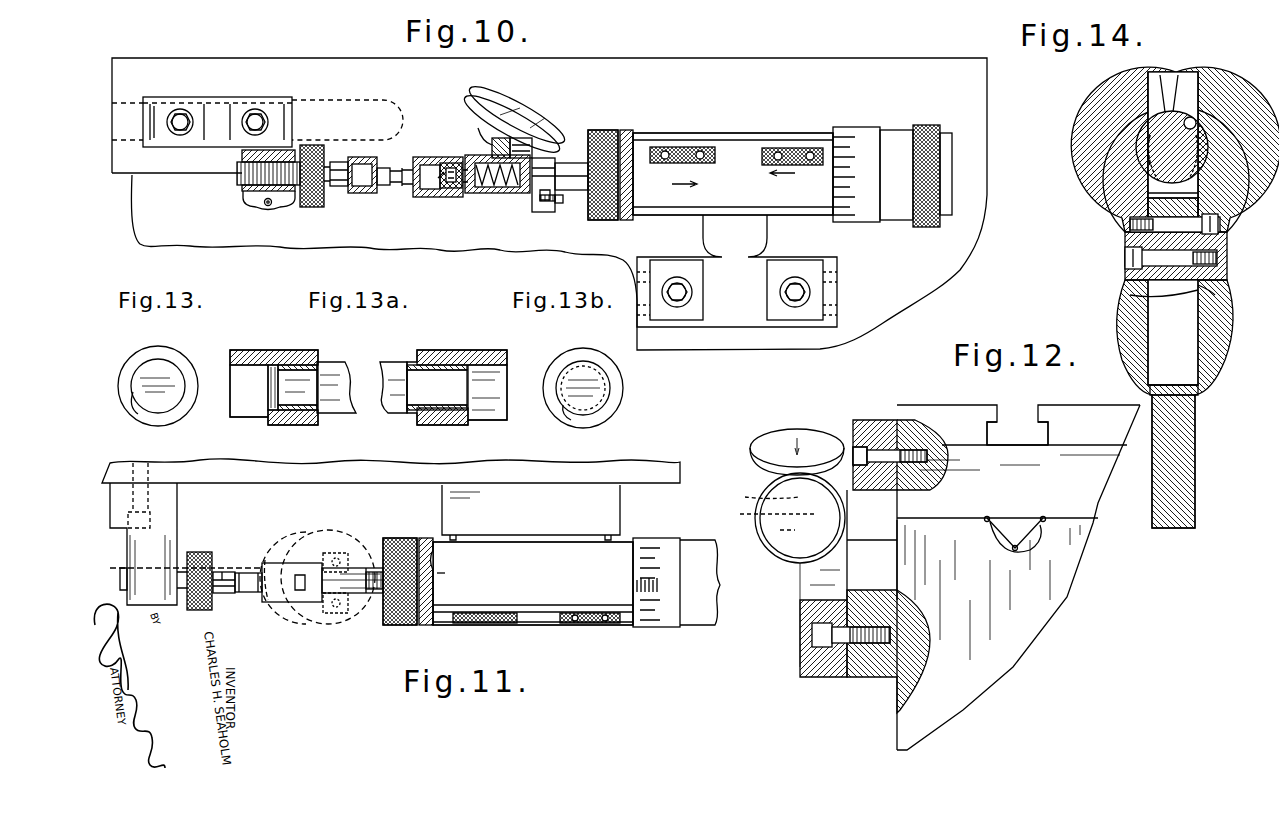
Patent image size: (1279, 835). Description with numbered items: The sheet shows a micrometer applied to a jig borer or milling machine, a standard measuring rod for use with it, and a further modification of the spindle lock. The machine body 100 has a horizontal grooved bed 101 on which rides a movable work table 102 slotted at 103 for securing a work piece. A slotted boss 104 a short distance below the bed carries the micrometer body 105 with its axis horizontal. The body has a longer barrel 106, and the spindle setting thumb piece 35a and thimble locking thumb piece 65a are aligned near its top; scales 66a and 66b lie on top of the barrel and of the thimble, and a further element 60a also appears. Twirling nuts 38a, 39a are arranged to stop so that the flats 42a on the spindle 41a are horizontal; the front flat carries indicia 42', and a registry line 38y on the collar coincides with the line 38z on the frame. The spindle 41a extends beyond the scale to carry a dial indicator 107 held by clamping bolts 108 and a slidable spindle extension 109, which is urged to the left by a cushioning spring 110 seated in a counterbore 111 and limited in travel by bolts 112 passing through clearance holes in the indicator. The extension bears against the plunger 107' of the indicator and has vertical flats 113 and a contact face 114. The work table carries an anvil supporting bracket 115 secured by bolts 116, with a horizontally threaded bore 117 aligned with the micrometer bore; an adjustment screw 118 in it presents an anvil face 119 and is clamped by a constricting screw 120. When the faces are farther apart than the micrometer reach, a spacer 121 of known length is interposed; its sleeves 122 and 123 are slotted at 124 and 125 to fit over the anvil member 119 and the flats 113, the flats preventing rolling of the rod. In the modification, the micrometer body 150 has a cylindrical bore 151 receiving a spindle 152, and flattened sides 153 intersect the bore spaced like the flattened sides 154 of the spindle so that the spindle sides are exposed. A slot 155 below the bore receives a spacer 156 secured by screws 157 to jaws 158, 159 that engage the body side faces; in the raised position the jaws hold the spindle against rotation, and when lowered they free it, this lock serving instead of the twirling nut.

In FIG. 10, the spindle setting thumb piece 35a is at (720, 165).
In FIG. 11, the spindle setting thumb piece 35a is at (480, 612).
In FIG. 10, the twirling nut 38a is at (628, 130).
In FIG. 11, the twirling nut 38a is at (428, 626).
In FIG. 11, the registry line 38y is at (440, 562).
In FIG. 11, the frame line 38z is at (440, 575).
In FIG. 10, the twirling nut 39a is at (605, 130).
In FIG. 11, the twirling nut 39a is at (398, 538).
In FIG. 10, the spindle 41a is at (572, 162).
In FIG. 11, the spindle 41a is at (365, 567).
In FIG. 12, the spindle 41a is at (745, 515).
In FIG. 11, the flats 42a is at (364, 594).
In FIG. 12, the flats 42a is at (748, 497).
In FIG. 11, the indicia 42' is at (379, 609).
In FIG. 10, the thimble 60a is at (900, 135).
In FIG. 10, the thimble locking thumb piece 65a is at (812, 167).
In FIG. 11, the thimble locking thumb piece 65a is at (585, 612).
In FIG. 11, the scale 66a is at (640, 598).
In FIG. 11, the scale 66b is at (670, 538).
In FIG. 10, the body 100 is at (178, 223).
In FIG. 12, the body 100 is at (990, 628).
In FIG. 12, the horizontal grooved bed 101 is at (1002, 550).
In FIG. 10, the movable work table 102 is at (170, 168).
In FIG. 13A, the movable work table 102 is at (364, 442).
In FIG. 11, the movable work table 102 is at (355, 468).
In FIG. 12, the movable work table 102 is at (1022, 484).
In FIG. 12, the slot 103 is at (1035, 412).
In FIG. 10, the slotted boss 104 is at (830, 262).
In FIG. 11, the slotted boss 104 is at (570, 512).
In FIG. 12, the slotted boss 104 is at (870, 680).
In FIG. 10, the micrometer body 105 is at (740, 128).
In FIG. 11, the micrometer body 105 is at (550, 630).
In FIG. 12, the micrometer body 105 is at (770, 566).
In FIG. 10, the barrel 106 is at (766, 200).
In FIG. 11, the barrel 106 is at (540, 575).
In FIG. 10, the dial indicator 107 is at (515, 118).
In FIG. 11, the dial indicator 107 is at (301, 560).
In FIG. 12, the dial indicator 107 is at (797, 440).
In FIG. 10, the plunger 107' is at (471, 131).
In FIG. 11, the plunger 107' is at (281, 556).
In FIG. 10, the clamping bolts 108 is at (545, 200).
In FIG. 11, the clamping bolts 108 is at (345, 548).
In FIG. 10, the slidable spindle extension 109 is at (498, 195).
In FIG. 11, the slidable spindle extension 109 is at (272, 563).
In FIG. 10, the cushioning spring 110 is at (452, 190).
In FIG. 10, the counterbore 111 is at (500, 140).
In FIG. 10, the bolts 112 is at (562, 205).
In FIG. 10, the vertical flats 113 is at (442, 165).
In FIG. 11, the vertical flats 113 is at (255, 594).
In FIG. 10, the contact face 114 is at (447, 190).
In FIG. 10, the anvil supporting bracket 115 is at (230, 126).
In FIG. 11, the anvil supporting bracket 115 is at (165, 521).
In FIG. 12, the anvil supporting bracket 115 is at (870, 420).
In FIG. 10, the bolts 116 is at (180, 109).
In FIG. 11, the bolts 116 is at (178, 498).
In FIG. 12, the bolts 116 is at (855, 440).
In FIG. 10, the horizontally threaded bore 117 is at (243, 163).
In FIG. 11, the horizontally threaded bore 117 is at (120, 548).
In FIG. 10, the adjustment screw 118 is at (312, 210).
In FIG. 11, the adjustment screw 118 is at (200, 552).
In FIG. 10, the anvil face 119 is at (339, 192).
In FIG. 11, the anvil face 119 is at (226, 572).
In FIG. 10, the constricting screw 120 is at (264, 206).
In FIG. 10, the spacer 121 is at (386, 190).
In FIG. 13, the spacer 121 is at (148, 377).
In FIG. 13A, the spacer 121 is at (347, 367).
In FIG. 13B, the spacer 121 is at (592, 392).
In FIG. 10, the sleeve 122 is at (366, 197).
In FIG. 13, the sleeve 122 is at (170, 360).
In FIG. 13A, the sleeve 122 is at (248, 350).
In FIG. 10, the sleeve 123 is at (432, 160).
In FIG. 13A, the sleeve 123 is at (483, 341).
In FIG. 13B, the sleeve 123 is at (592, 362).
In FIG. 13, the slot 124 is at (132, 417).
In FIG. 13A, the slot 124 is at (248, 405).
In FIG. 13A, the slot 125 is at (490, 408).
In FIG. 13B, the slot 125 is at (565, 420).
In FIG. 14, the body 150 is at (1158, 75).
In FIG. 14, the cylindrical bore 151 is at (1185, 95).
In FIG. 14, the spindle 152 is at (1160, 108).
In FIG. 14, the flattened sides 153 is at (1145, 90).
In FIG. 14, the flattened sides 154 is at (1150, 140).
In FIG. 14, the slot 155 is at (1160, 293).
In FIG. 14, the spacer 156 is at (1210, 285).
In FIG. 14, the screws 157 is at (1123, 257).
In FIG. 14, the jaw 158 is at (1235, 100).
In FIG. 14, the jaw 159 is at (1105, 103).